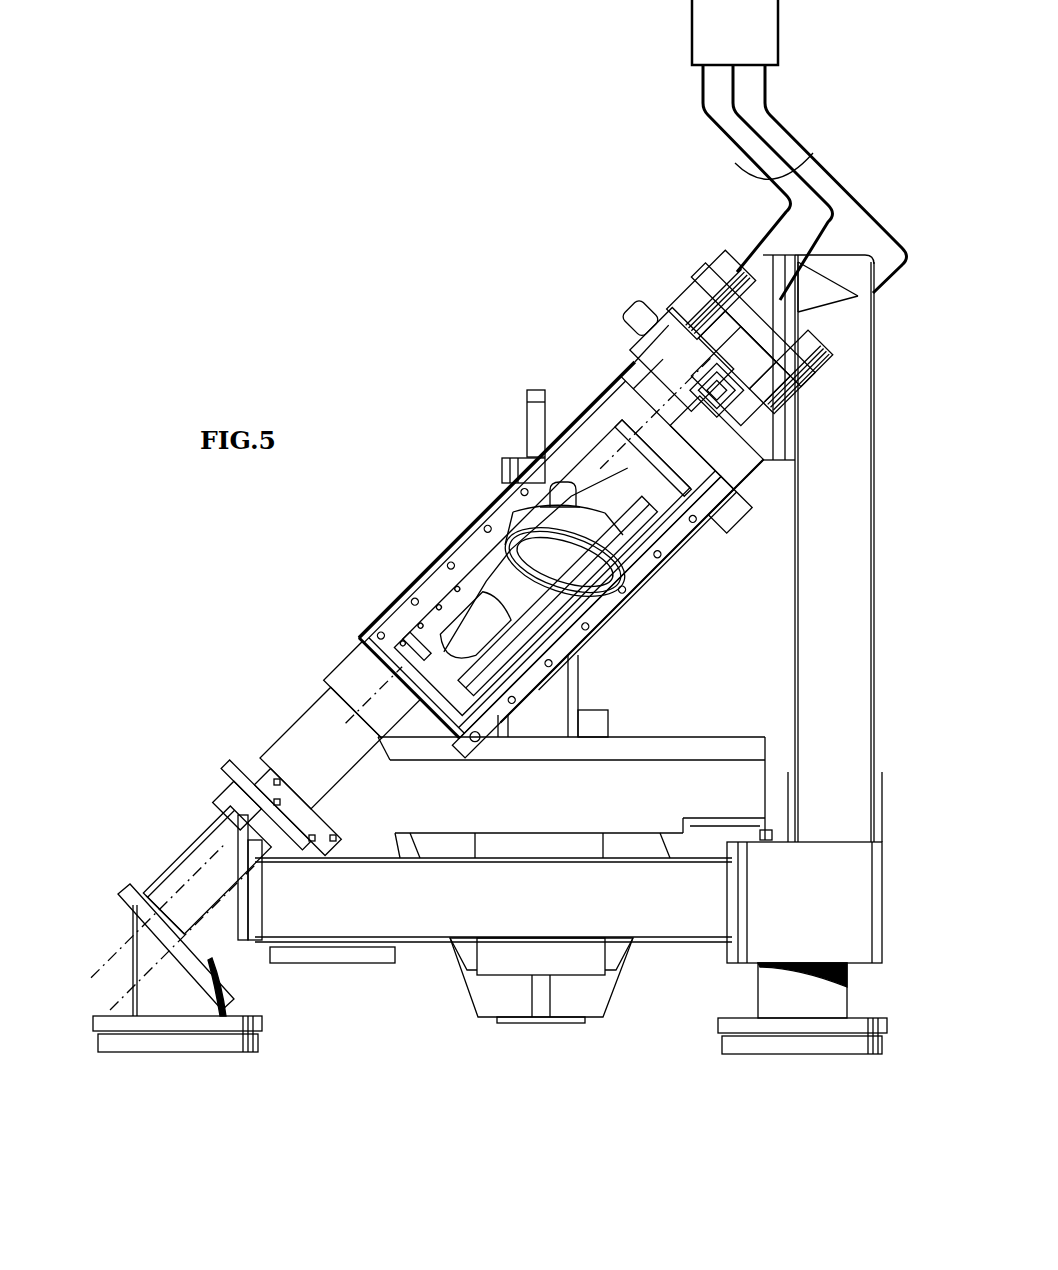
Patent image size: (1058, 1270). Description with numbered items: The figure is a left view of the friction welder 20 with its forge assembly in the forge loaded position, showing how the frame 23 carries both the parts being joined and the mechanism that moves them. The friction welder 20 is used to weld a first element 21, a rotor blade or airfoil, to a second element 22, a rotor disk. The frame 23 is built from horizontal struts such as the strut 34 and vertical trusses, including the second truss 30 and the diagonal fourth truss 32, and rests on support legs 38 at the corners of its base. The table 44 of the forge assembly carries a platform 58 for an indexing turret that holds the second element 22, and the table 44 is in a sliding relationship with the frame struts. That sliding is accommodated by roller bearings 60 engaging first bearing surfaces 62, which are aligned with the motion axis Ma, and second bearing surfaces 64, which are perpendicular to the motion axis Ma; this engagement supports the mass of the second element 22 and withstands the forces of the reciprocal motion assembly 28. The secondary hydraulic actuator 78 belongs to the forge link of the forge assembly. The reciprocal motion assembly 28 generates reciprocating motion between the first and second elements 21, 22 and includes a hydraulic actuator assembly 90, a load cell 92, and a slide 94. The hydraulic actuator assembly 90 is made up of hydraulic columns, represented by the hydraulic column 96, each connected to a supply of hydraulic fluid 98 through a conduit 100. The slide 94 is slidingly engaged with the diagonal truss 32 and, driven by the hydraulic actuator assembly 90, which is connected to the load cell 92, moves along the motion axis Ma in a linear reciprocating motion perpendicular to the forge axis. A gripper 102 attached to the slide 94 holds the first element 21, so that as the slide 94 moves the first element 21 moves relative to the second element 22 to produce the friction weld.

The friction welder 20 is at (464, 330).
The first element 21 is at (480, 560).
The second element 22 is at (655, 582).
The frame 23 is at (437, 962).
The reciprocal motion assembly 28 is at (578, 410).
The second truss 30 is at (848, 571).
The fourth truss 32 is at (360, 678).
The strut 34 is at (168, 866).
The support legs 38 is at (785, 985).
The table 44 is at (640, 752).
The platform 58 is at (722, 737).
The roller bearings 60 is at (282, 802).
The first bearing surfaces 62 is at (345, 855).
The second bearing surfaces 64 is at (268, 770).
The secondary hydraulic actuator 78 is at (535, 432).
The hydraulic actuator assembly 90 is at (690, 258).
The load cell 92 is at (608, 515).
The slide 94 is at (413, 640).
The hydraulic column 96 is at (700, 312).
The supply of hydraulic fluid 98 is at (746, 30).
The conduit 100 is at (748, 166).
The gripper 102 is at (442, 585).
The motion axis Ma is at (125, 985).